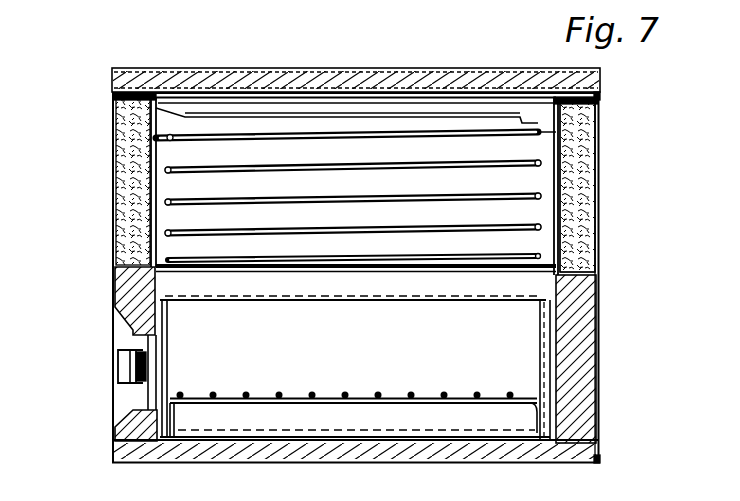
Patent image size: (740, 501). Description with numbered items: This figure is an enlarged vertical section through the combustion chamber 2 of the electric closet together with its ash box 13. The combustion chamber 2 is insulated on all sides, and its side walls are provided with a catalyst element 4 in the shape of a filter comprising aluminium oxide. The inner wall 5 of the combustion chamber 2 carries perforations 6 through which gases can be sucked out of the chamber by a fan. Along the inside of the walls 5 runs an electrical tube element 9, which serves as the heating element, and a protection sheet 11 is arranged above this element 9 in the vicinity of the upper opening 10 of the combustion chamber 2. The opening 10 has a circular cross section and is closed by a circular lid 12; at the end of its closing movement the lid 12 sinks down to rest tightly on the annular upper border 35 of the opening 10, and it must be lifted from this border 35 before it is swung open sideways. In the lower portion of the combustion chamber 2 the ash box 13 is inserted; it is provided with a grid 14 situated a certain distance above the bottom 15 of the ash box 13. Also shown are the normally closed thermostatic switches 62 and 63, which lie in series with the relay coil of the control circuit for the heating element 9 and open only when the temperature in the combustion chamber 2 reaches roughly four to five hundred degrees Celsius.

The combustion chamber 2 is at (110, 167).
The catalyst element 4 is at (580, 167).
The inner wall 5 is at (112, 233).
The perforations 6 is at (110, 200).
The electrical tube element 9 is at (562, 130).
The upper opening 10 is at (255, 105).
The protection sheet 11 is at (183, 112).
The lid 12 is at (376, 88).
The ash box 13 is at (543, 372).
The grid 14 is at (317, 408).
The bottom 15 is at (408, 447).
The annular upper border 35 is at (112, 101).
The thermostatic switch 62 is at (92, 382).
The thermostatic switch 63 is at (123, 370).